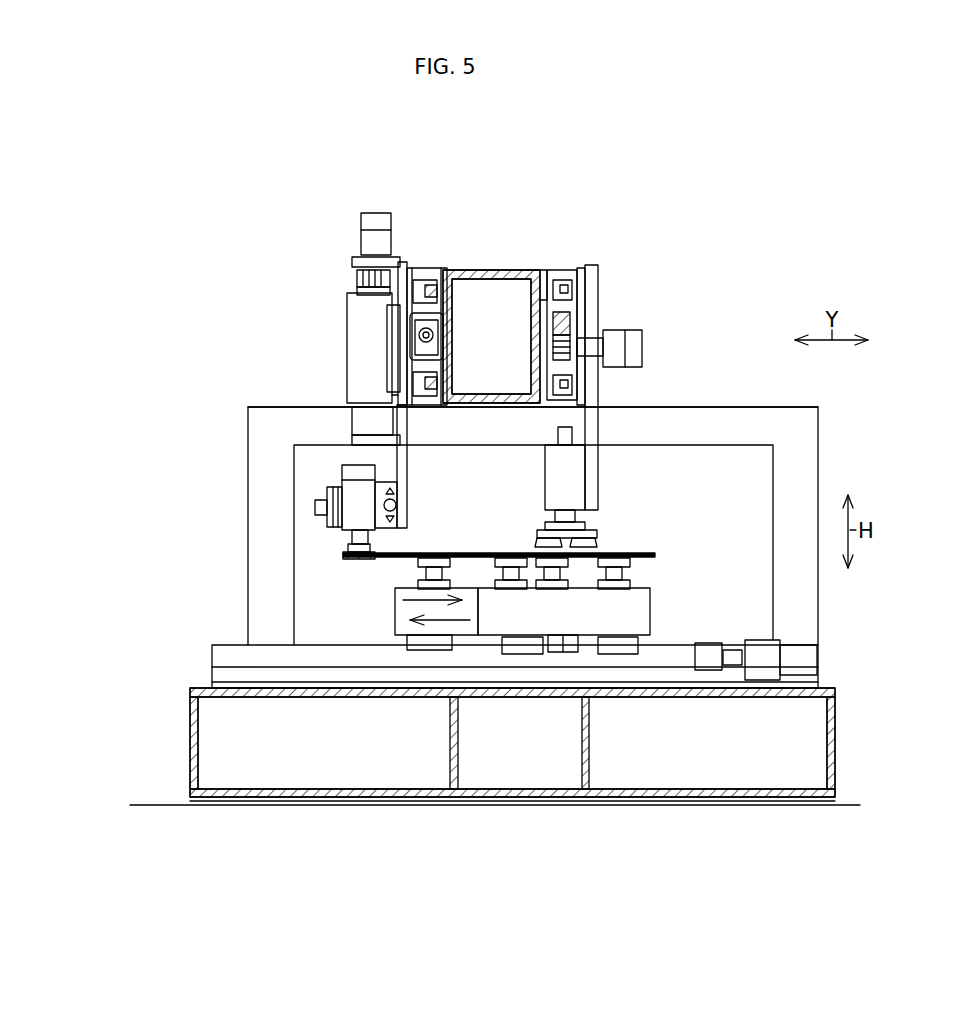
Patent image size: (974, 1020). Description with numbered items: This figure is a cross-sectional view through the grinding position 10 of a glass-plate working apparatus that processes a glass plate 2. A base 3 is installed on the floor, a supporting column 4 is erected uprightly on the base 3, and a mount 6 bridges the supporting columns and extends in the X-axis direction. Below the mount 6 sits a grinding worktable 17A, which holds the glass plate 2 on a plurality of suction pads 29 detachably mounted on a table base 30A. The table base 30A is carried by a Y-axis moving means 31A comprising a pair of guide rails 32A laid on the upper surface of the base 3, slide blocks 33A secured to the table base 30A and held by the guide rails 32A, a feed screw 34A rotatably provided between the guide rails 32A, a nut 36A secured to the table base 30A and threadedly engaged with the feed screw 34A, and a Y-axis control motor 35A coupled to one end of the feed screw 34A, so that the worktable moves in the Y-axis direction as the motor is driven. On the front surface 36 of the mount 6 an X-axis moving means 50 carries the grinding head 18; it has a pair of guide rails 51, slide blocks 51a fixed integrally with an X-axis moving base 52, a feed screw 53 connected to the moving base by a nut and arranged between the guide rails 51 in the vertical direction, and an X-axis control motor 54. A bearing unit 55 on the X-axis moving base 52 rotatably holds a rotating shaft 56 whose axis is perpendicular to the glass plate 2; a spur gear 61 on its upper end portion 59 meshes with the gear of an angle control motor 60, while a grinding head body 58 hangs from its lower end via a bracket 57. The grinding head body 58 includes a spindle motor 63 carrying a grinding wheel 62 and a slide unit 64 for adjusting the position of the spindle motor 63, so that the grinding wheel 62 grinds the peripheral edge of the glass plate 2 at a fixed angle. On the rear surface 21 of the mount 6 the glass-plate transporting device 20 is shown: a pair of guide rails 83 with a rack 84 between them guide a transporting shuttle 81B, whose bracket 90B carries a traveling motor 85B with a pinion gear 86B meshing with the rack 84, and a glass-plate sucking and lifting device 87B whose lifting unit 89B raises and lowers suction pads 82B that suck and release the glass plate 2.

The glass plate 2 is at (480, 556).
The base 3 is at (836, 748).
The supporting column 4 is at (800, 463).
The mount 6 is at (543, 277).
The grinding position 10 is at (398, 570).
The grinding worktable 17A is at (607, 558).
The grinding head 18 is at (367, 470).
The glass-plate transporting device 20 is at (582, 290).
The rear surface 21 is at (548, 300).
The suction pad 29 is at (432, 557).
The table base 30A is at (555, 617).
The Y-axis moving means 31A is at (512, 595).
The guide rail 32A is at (327, 657).
The slide block 33A is at (433, 652).
The feed screw 34A is at (783, 700).
The Y-axis control motor 35A is at (797, 658).
The front surface 36 is at (420, 348).
The nut 36A is at (572, 640).
The X-axis moving means 50 is at (417, 285).
The guide rail 51 is at (430, 290).
The slide block 51a is at (420, 283).
The X-axis moving base 52 is at (407, 290).
The feed screw 53 is at (423, 333).
The X-axis control motor 54 is at (447, 313).
The bearing unit 55 is at (370, 358).
The rotating shaft 56 is at (377, 403).
The bracket 57 is at (363, 447).
The grinding head body 58 is at (353, 477).
The upper end portion 59 is at (360, 289).
The angle control motor 60 is at (378, 222).
The spur gear 61 is at (357, 280).
The grinding wheel 62 is at (340, 557).
The spindle motor 63 is at (328, 503).
The slide unit 64 is at (358, 495).
The transporting shuttle 81B is at (613, 403).
The suction pad 82B is at (598, 540).
The guide rail 83 is at (563, 283).
The rack 84 is at (567, 322).
The traveling motor 85B is at (617, 355).
The pinion gear 86B is at (572, 347).
The glass-plate sucking and lifting device 87B is at (590, 468).
The lifting unit 89B is at (548, 482).
The bracket 90B is at (592, 433).